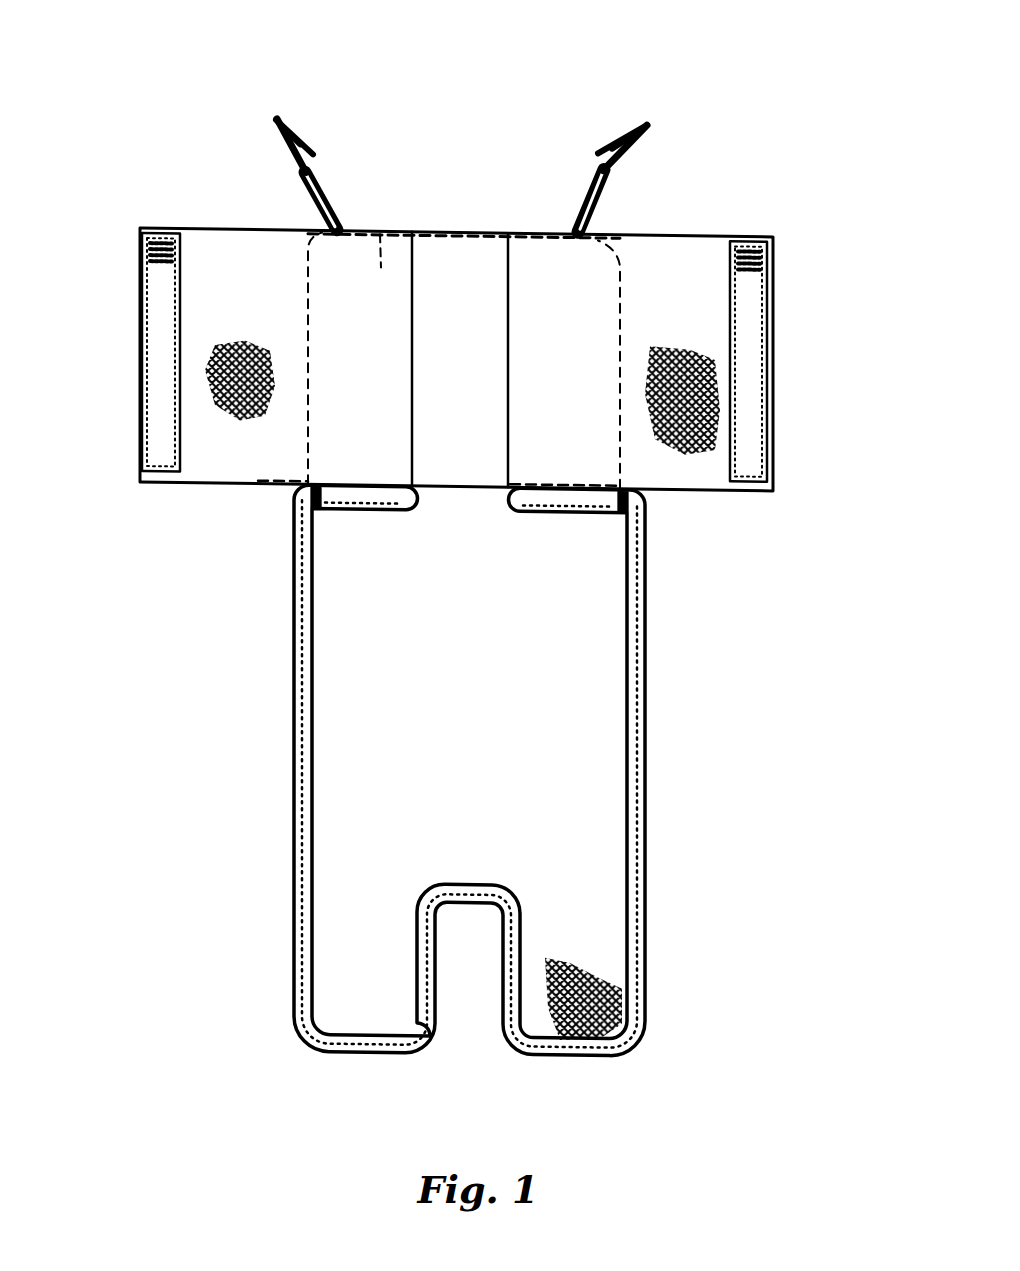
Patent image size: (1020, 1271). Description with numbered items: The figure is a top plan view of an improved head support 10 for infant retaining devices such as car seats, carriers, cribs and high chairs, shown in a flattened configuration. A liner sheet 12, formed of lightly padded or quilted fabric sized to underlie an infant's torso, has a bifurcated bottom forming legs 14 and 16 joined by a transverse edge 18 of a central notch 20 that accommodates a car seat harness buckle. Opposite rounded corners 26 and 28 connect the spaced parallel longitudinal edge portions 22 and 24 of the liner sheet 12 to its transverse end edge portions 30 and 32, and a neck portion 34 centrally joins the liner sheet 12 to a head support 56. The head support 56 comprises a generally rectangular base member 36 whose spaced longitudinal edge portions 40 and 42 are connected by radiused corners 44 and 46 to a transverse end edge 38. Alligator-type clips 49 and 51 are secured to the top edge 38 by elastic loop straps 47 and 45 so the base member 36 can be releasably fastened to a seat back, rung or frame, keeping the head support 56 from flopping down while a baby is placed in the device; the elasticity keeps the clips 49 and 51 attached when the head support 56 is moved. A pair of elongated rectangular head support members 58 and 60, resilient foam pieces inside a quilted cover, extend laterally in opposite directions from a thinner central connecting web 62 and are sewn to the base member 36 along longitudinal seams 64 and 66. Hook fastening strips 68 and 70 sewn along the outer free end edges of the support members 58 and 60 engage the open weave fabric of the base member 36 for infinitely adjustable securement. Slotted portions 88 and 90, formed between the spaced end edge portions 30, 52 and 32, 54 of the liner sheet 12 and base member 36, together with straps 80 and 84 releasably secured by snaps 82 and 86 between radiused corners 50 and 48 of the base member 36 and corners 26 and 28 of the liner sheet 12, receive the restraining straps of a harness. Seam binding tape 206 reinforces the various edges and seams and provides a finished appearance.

The head support 10 is at (158, 800).
The liner sheet 12 is at (469, 770).
The leg 14 is at (340, 927).
The leg 16 is at (600, 953).
The transverse edge 18 is at (468, 886).
The notch 20 is at (473, 942).
The longitudinal edge portion 22 is at (293, 756).
The longitudinal edge portion 24 is at (647, 771).
The rounded corner 26 is at (300, 522).
The rounded corner 28 is at (644, 528).
The transverse end edge portion 30 is at (376, 513).
The transverse end edge portion 32 is at (565, 513).
The neck portion 34 is at (462, 492).
The base member 36 is at (381, 258).
The transverse end edge 38 is at (492, 229).
The longitudinal edge portion 40 is at (623, 355).
The longitudinal edge portion 42 is at (303, 343).
The radiused corner 44 is at (621, 252).
The elastic loop strap 45 is at (590, 188).
The radiused corner 46 is at (308, 245).
The elastic loop strap 47 is at (328, 176).
The radiused corner 48 is at (627, 488).
The alligator-type clip 49 is at (291, 116).
The radiused corner 50 is at (258, 478).
The alligator-type clip 51 is at (652, 128).
The end edge portion 52 is at (365, 483).
The end edge portion 54 is at (568, 487).
The head support 56 is at (164, 146).
The head support member 58 is at (243, 271).
The head support member 60 is at (680, 281).
The connecting web 62 is at (462, 329).
The longitudinal seam 64 is at (412, 390).
The longitudinal seam 66 is at (508, 395).
The hook fastening strip 68 is at (155, 376).
The hook fastening strip 70 is at (748, 410).
The strap 80 is at (310, 494).
The snap 82 is at (300, 545).
The strap 84 is at (625, 497).
The snap 86 is at (645, 572).
The slotted portion 88 is at (321, 513).
The slotted portion 90 is at (622, 513).
The seam binding tape 206 is at (633, 851).